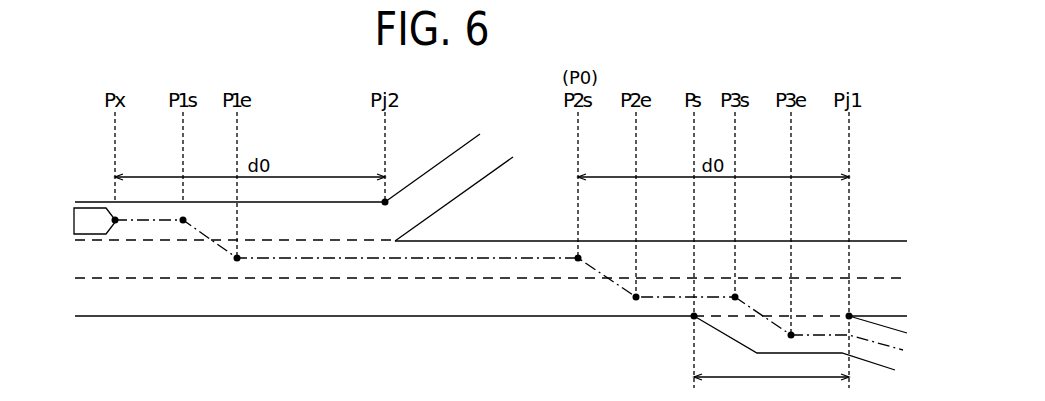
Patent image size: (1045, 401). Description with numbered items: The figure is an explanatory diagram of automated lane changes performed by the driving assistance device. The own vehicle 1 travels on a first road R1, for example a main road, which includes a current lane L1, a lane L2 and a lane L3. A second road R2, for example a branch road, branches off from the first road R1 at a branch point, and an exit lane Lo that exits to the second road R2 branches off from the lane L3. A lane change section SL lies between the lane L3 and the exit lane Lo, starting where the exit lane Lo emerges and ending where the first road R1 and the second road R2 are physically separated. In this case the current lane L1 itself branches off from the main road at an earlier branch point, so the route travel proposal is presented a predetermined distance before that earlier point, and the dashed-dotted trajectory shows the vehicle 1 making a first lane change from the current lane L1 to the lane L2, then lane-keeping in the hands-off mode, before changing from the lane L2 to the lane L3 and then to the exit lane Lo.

The own vehicle 1 is at (73, 220).
The first road R1 is at (97, 318).
The second road R2 is at (885, 367).
The current lane L1 is at (135, 228).
The lane L2 is at (180, 258).
The lane L3 is at (223, 297).
The exit lane Lo is at (765, 335).
The lane change section SL is at (771, 387).